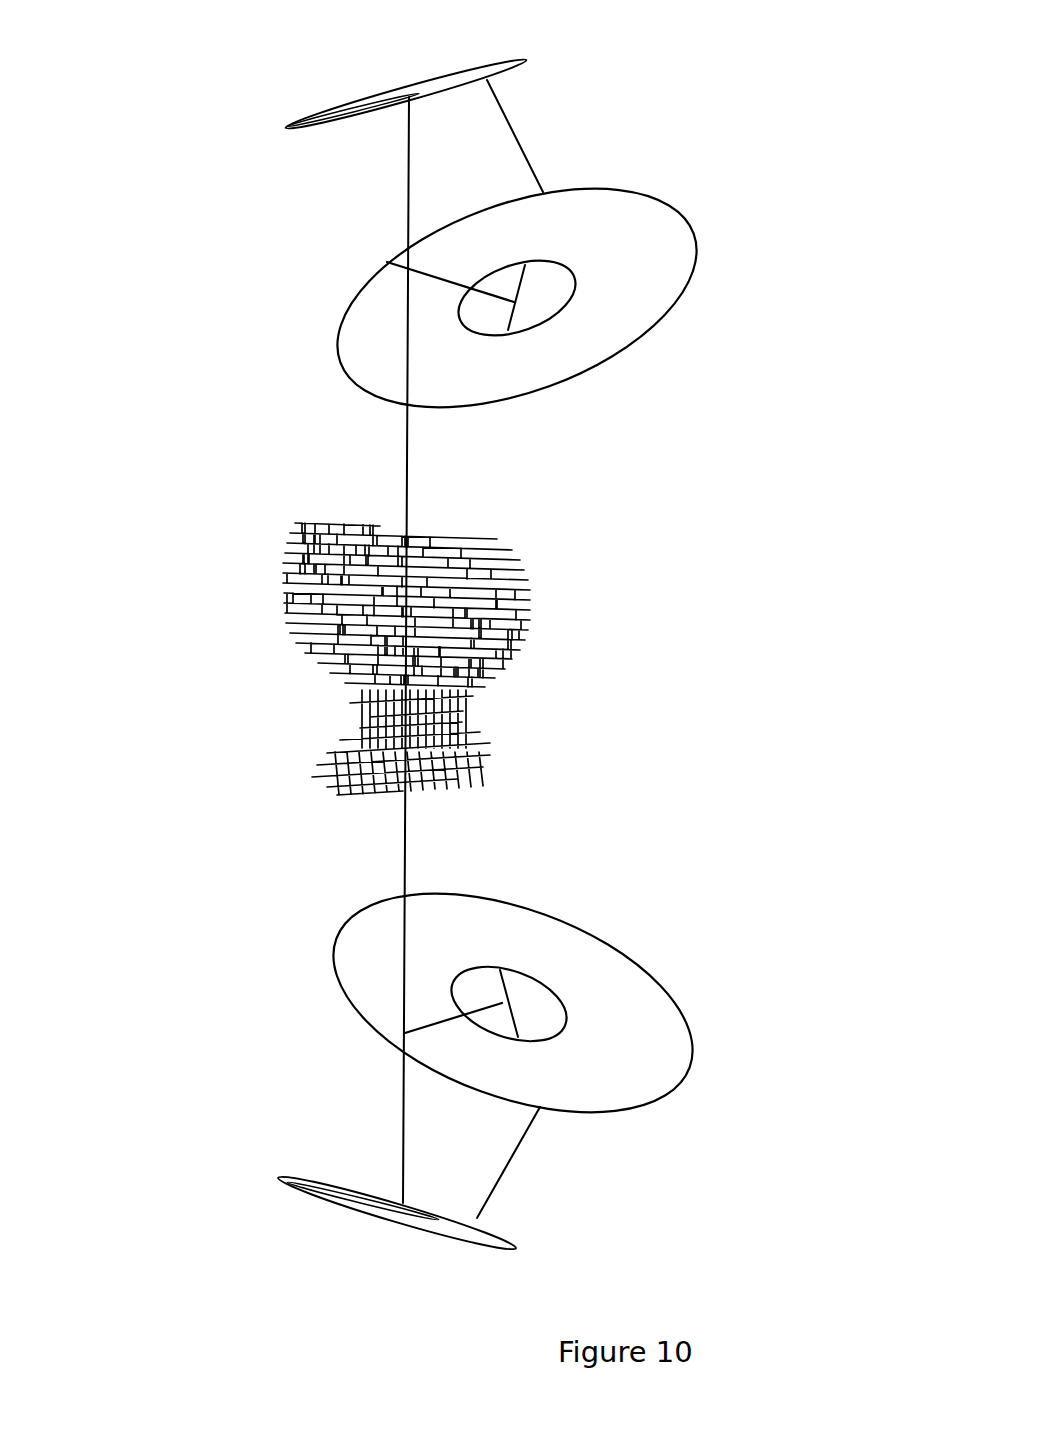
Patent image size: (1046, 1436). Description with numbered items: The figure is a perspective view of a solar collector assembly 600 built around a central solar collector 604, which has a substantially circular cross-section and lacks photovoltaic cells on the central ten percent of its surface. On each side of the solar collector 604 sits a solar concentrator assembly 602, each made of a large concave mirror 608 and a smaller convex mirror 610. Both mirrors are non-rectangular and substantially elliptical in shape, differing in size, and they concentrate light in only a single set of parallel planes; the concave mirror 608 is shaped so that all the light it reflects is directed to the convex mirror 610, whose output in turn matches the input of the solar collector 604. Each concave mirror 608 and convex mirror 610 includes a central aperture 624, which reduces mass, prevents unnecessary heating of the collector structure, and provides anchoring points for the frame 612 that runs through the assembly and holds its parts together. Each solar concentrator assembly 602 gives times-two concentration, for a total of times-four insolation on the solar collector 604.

The solar collector assembly 600 is at (176, 152).
The solar concentrator assembly 602 is at (618, 158).
The solar collector 604 is at (520, 637).
The concave mirror 608 is at (663, 298).
The convex mirror 610 is at (343, 110).
The frame 612 is at (405, 477).
The aperture 624 is at (533, 293).